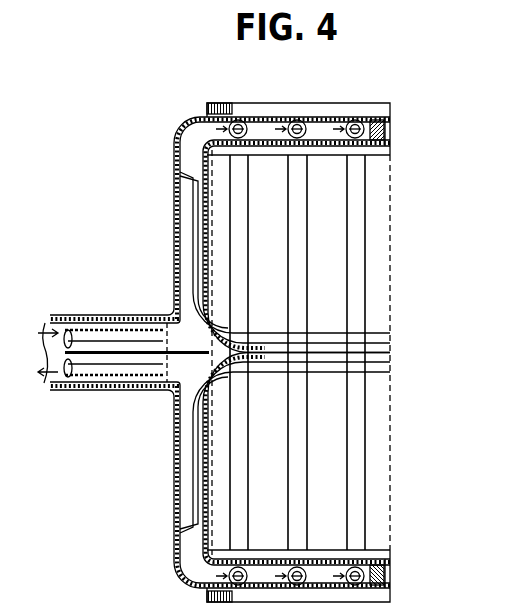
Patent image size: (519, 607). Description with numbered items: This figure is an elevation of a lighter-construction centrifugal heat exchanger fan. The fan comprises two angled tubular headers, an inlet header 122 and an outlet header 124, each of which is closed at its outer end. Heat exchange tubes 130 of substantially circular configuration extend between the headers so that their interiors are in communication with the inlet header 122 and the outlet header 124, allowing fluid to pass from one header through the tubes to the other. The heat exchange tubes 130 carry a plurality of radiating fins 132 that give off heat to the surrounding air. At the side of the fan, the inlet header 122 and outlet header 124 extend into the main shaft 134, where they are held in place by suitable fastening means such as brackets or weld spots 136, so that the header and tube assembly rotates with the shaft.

The inlet header 122 is at (178, 196).
The outlet header 124 is at (180, 470).
The heat exchange tubes 130 is at (355, 248).
The radiating fins 132 is at (288, 108).
The main shaft 134 is at (118, 314).
The weld spots 136 is at (93, 381).